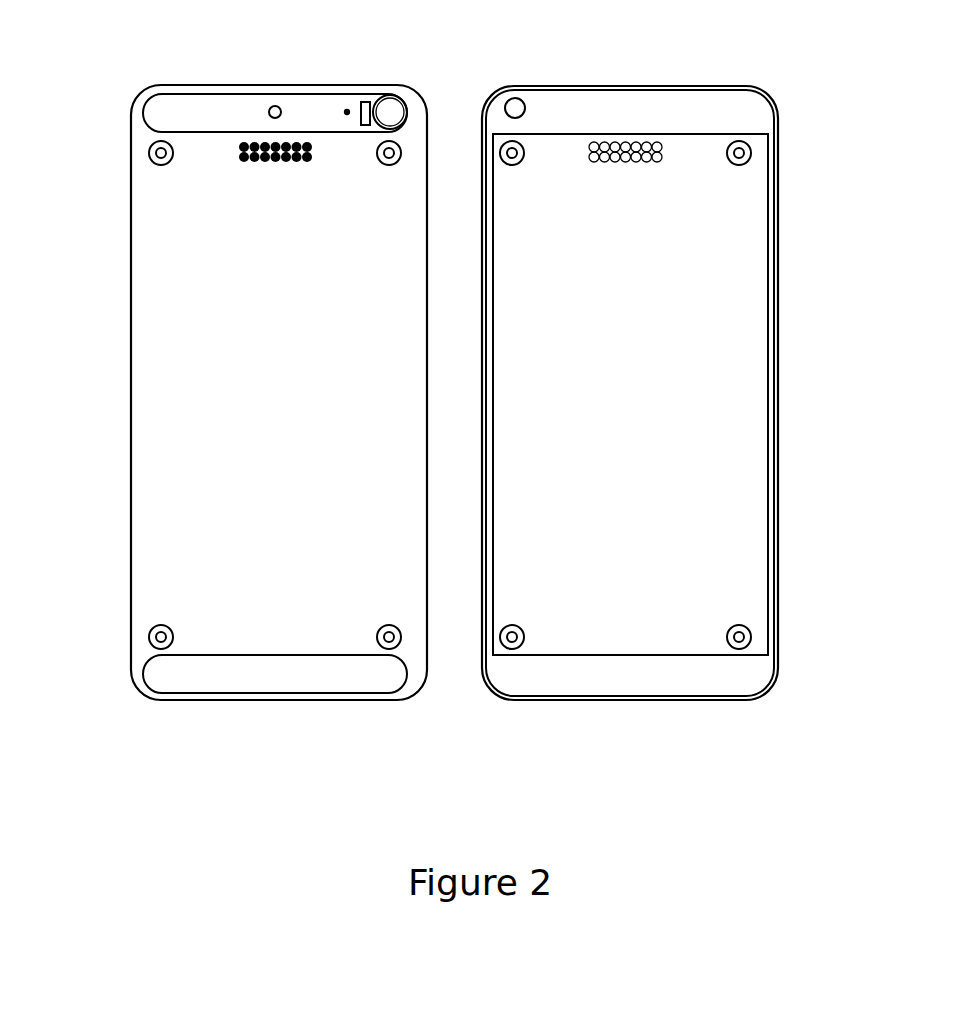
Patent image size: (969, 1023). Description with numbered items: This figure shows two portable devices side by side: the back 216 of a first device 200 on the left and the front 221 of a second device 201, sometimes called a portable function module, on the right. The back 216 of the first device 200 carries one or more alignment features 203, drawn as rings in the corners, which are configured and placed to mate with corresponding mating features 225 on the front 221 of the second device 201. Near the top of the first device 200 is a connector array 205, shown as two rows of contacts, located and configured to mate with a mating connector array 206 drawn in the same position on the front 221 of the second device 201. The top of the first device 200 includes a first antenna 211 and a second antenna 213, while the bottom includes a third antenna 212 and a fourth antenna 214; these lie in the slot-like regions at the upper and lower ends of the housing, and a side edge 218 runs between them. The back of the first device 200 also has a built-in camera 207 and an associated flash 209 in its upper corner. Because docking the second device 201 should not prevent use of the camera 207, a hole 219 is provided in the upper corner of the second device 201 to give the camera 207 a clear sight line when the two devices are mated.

The first device 200 is at (271, 417).
The second device 201 is at (661, 398).
The alignment features 203 is at (151, 153).
The connector array 205 is at (293, 161).
The mating connector array 206 is at (643, 162).
The built-in camera 207 is at (420, 98).
The flash 209 is at (371, 102).
The first antenna 211 is at (205, 85).
The third antenna 212 is at (205, 700).
The second antenna 213 is at (327, 85).
The fourth antenna 214 is at (315, 700).
The back of the first device 216 is at (710, 87).
The side edge 218 is at (145, 470).
The hole 219 is at (516, 102).
The front of the second device 221 is at (753, 500).
The mating features 225 is at (746, 142).